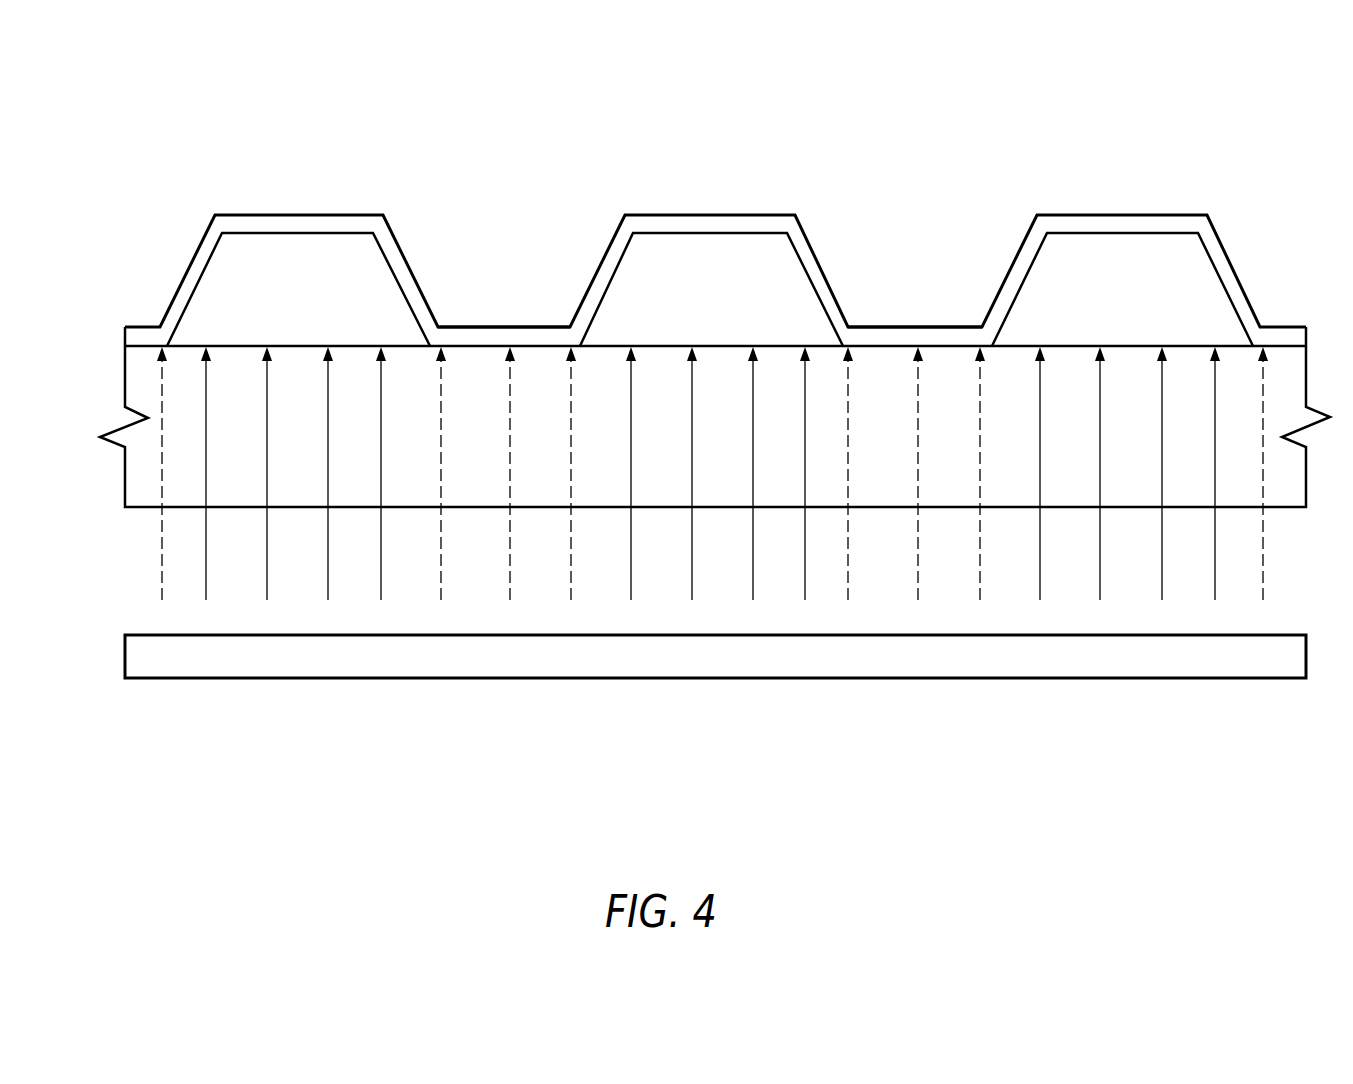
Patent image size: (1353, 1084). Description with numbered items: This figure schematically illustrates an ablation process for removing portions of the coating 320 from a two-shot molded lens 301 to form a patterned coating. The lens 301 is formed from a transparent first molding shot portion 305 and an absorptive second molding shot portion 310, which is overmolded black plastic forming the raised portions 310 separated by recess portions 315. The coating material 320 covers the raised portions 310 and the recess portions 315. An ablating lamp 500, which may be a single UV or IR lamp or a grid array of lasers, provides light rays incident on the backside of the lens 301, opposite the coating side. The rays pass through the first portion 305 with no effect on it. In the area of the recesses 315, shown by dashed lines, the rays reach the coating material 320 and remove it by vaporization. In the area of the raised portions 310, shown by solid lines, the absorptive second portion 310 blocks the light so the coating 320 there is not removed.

The lens 301 is at (152, 130).
The first molding shot portion 305 is at (740, 457).
The second molding shot portion 310 is at (318, 306).
The recess portions 315 is at (508, 225).
The coating material 320 is at (300, 213).
The ablating lamp 500 is at (716, 669).